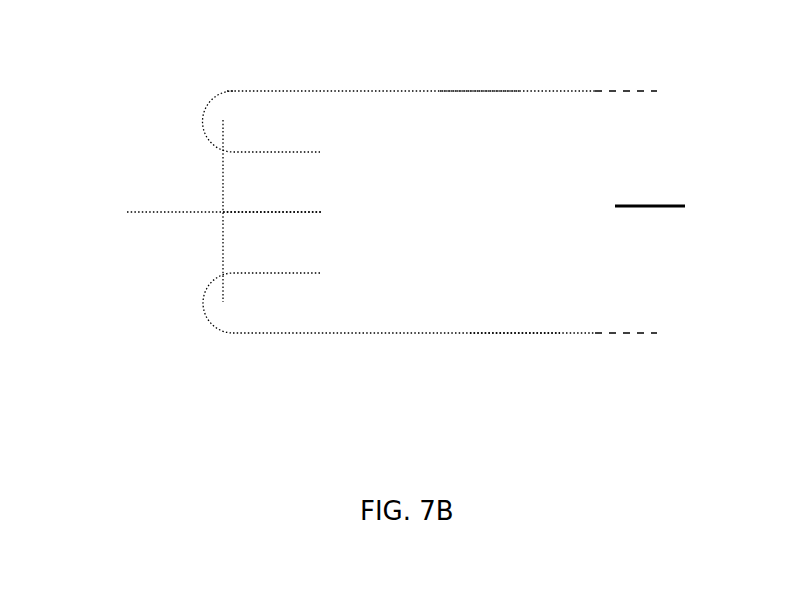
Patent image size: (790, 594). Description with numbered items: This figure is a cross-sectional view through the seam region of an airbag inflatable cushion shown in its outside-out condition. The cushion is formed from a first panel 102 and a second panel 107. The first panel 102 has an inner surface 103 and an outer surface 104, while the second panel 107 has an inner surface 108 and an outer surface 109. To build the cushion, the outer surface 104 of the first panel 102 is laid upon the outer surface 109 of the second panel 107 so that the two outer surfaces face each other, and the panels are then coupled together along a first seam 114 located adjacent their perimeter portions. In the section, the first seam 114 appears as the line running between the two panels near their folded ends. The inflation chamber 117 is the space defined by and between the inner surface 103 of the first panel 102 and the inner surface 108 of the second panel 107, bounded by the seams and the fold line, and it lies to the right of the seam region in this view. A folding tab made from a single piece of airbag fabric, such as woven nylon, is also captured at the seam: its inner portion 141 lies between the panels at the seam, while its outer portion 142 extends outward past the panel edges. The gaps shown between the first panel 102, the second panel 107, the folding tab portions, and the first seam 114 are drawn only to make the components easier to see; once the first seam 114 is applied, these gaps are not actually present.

The first panel 102 is at (341, 90).
The inner surface 103 is at (470, 100).
The outer surface 104 is at (198, 110).
The second panel 107 is at (369, 334).
The inner surface 108 is at (510, 324).
The outer surface 109 is at (197, 304).
The first seam 114 is at (223, 243).
The inflation chamber 117 is at (650, 193).
The inner portion 141 is at (290, 212).
The outer portion 142 is at (150, 212).